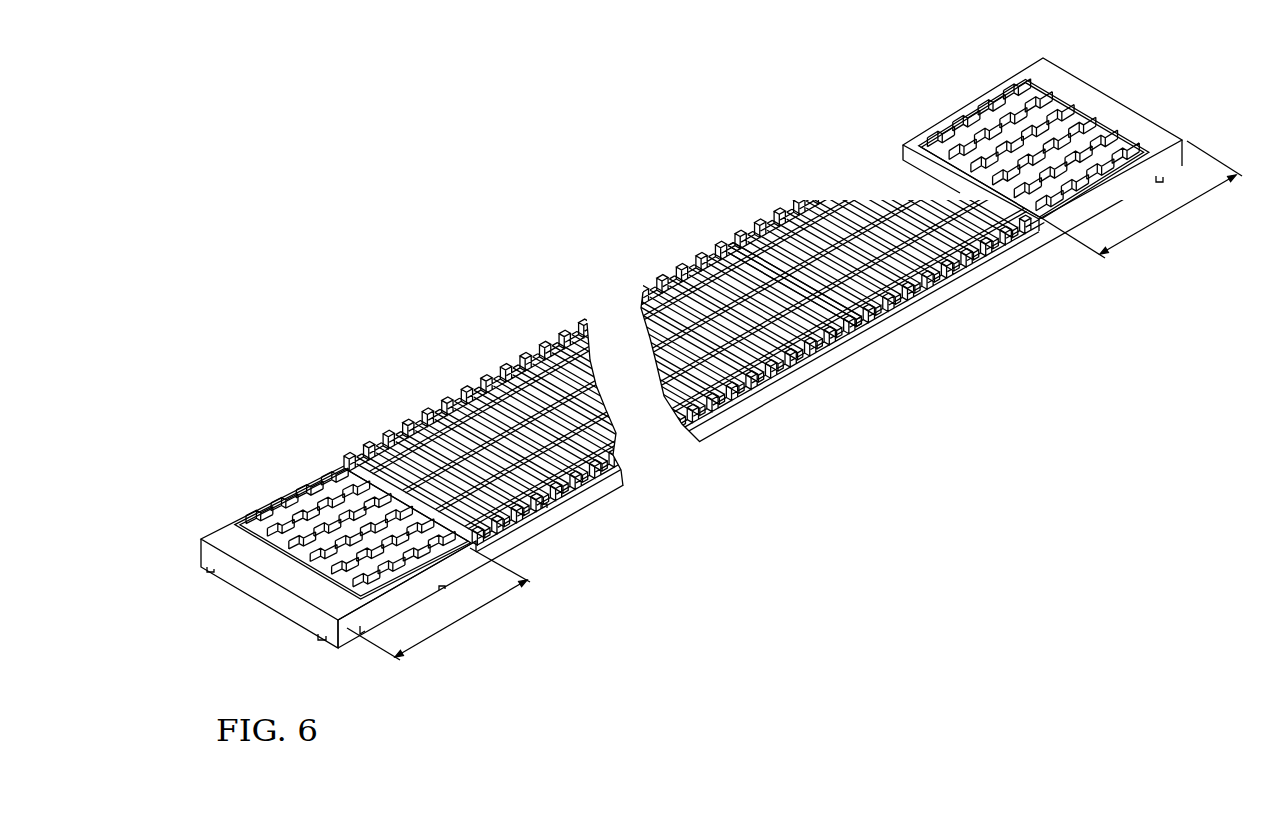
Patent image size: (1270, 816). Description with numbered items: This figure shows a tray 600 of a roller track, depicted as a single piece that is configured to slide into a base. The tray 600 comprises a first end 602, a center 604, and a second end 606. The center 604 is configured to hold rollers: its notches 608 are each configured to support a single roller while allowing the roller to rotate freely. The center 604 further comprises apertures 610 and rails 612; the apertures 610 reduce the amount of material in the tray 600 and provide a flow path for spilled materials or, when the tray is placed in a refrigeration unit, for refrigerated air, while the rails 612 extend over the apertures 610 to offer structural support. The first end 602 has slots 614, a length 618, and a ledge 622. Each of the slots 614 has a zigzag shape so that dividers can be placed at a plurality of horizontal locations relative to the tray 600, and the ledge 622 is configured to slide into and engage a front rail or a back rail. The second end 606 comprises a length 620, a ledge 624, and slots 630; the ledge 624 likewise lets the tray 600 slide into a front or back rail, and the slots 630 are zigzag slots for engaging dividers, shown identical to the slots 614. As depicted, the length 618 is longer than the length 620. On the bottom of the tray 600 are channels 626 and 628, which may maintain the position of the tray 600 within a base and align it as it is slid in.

The tray 600 is at (534, 279).
The first end 602 is at (952, 122).
The center 604 is at (783, 383).
The second end 606 is at (323, 483).
The notches 608 is at (803, 190).
The apertures 610 is at (856, 319).
The rails 612 is at (727, 278).
The slots 614 is at (1018, 95).
The length 618 is at (1141, 199).
The length 620 is at (438, 604).
The ledge 622 is at (1118, 95).
The ledge 624 is at (272, 613).
The channel 626 is at (203, 590).
The channel 628 is at (318, 658).
The slots 630 is at (282, 510).